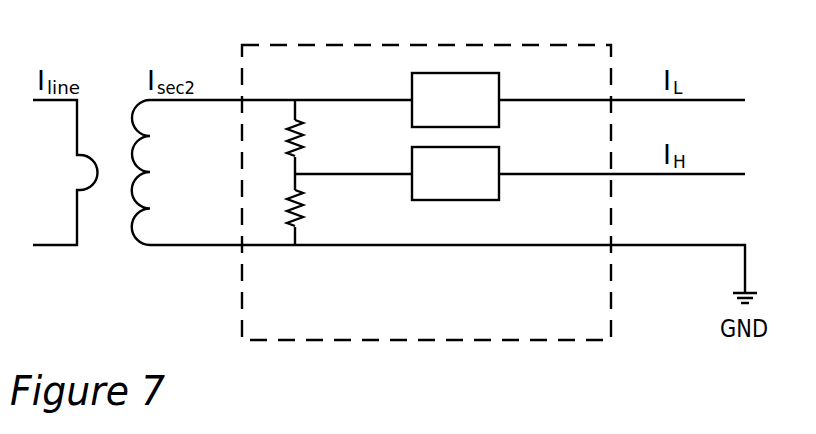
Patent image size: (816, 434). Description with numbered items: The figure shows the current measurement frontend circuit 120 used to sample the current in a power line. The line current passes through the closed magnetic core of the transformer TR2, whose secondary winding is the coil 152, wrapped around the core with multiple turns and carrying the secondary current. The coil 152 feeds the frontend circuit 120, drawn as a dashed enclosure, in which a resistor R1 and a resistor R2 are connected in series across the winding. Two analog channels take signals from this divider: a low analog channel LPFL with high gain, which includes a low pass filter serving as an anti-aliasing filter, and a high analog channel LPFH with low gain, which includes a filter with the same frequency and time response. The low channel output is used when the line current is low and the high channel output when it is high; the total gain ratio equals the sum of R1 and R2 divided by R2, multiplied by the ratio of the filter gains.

The current measurement frontend circuit 120 is at (458, 176).
The coil 152 is at (156, 175).
The transformer TR2 is at (80, 172).
The resistor R1 is at (314, 139).
The resistor R2 is at (314, 209).
The low analog channel LPFL is at (455, 100).
The high analog channel LPFH is at (455, 173).